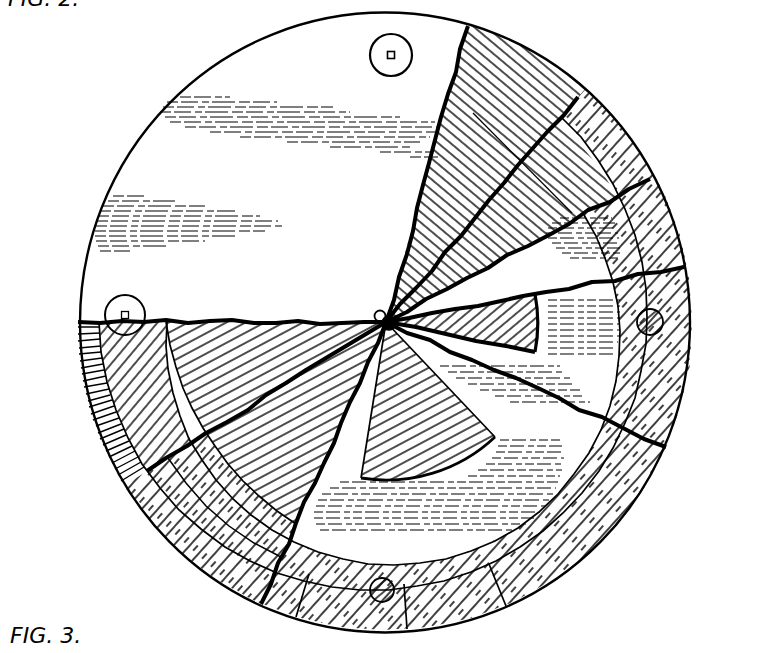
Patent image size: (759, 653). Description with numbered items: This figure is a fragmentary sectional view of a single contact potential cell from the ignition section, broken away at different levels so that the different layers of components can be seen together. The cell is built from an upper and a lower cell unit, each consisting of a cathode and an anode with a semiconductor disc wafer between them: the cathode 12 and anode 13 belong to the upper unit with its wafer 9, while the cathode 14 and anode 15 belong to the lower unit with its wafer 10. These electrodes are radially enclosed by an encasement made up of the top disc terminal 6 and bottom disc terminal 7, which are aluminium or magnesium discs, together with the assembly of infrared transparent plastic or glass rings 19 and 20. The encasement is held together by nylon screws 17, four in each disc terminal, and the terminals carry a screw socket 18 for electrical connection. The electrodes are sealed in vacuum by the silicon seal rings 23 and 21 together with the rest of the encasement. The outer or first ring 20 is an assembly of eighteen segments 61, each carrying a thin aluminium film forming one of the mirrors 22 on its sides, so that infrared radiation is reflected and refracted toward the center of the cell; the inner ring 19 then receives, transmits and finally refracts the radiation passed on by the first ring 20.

The top disc terminal 6 is at (473, 157).
The bottom disc terminal 7 is at (237, 454).
The semiconductor disc wafer 9 is at (522, 323).
The semiconductor disc wafer 10 is at (450, 433).
The cathode electrode 12 is at (590, 257).
The anode electrode 13 is at (600, 367).
The cathode electrode 14 is at (550, 443).
The anode electrode 15 is at (517, 493).
The nylon screws 17 is at (378, 52).
The screw socket 18 is at (384, 318).
The infrared transparent ring 19 is at (565, 160).
The first ring 20 is at (640, 165).
The silicon seal ring 21 is at (562, 167).
The mirrors 22 is at (255, 595).
The silicon seal ring 23 is at (137, 387).
The segment 61 is at (543, 583).